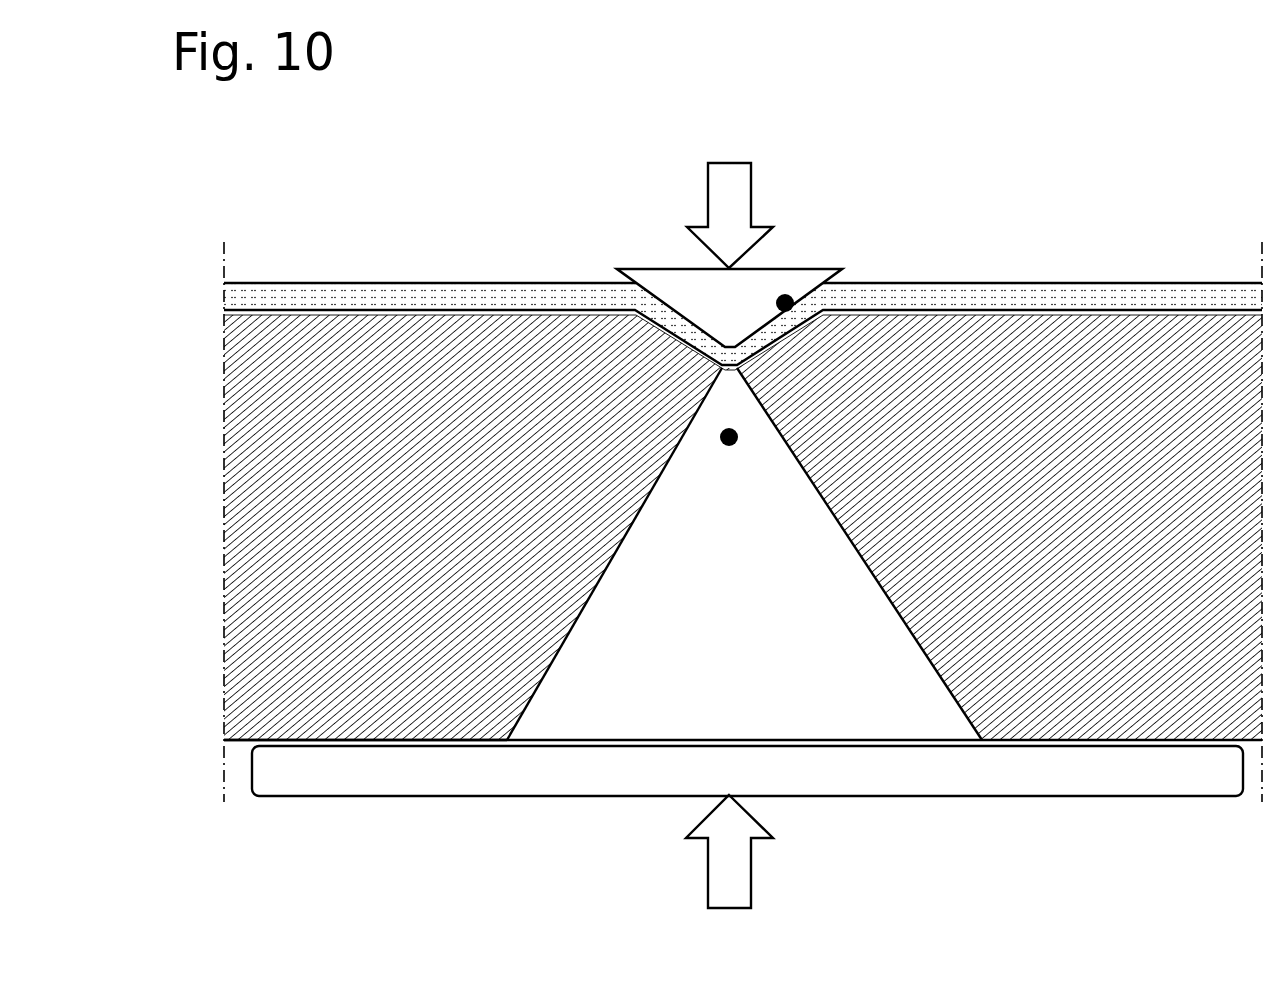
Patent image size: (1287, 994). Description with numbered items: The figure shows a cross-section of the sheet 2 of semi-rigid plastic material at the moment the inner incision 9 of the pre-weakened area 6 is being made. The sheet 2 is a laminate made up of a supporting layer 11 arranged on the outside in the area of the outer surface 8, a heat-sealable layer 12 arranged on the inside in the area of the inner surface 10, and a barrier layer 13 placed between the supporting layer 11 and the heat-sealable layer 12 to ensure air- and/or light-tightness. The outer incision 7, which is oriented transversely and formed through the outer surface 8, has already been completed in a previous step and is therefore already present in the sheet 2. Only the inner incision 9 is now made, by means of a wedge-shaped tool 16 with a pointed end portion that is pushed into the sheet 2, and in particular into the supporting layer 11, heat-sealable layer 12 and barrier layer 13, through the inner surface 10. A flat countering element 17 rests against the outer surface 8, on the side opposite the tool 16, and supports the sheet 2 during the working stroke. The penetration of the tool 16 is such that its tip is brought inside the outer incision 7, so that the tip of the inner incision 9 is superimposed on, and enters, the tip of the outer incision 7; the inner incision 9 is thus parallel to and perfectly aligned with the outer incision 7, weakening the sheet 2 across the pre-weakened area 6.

The sheet of semi-rigid plastic material 2 is at (1147, 183).
The pre-weakened area 6 is at (611, 818).
The outer incision 7 is at (731, 447).
The outer surface 8 is at (240, 746).
The inner incision 9 is at (785, 296).
The inner surface 10 is at (308, 280).
The supporting layer 11 is at (1187, 697).
The heat-sealable layer 12 is at (388, 300).
The barrier layer 13 is at (1065, 313).
The wedge-shaped tool 16 is at (675, 290).
The countering element 17 is at (388, 768).